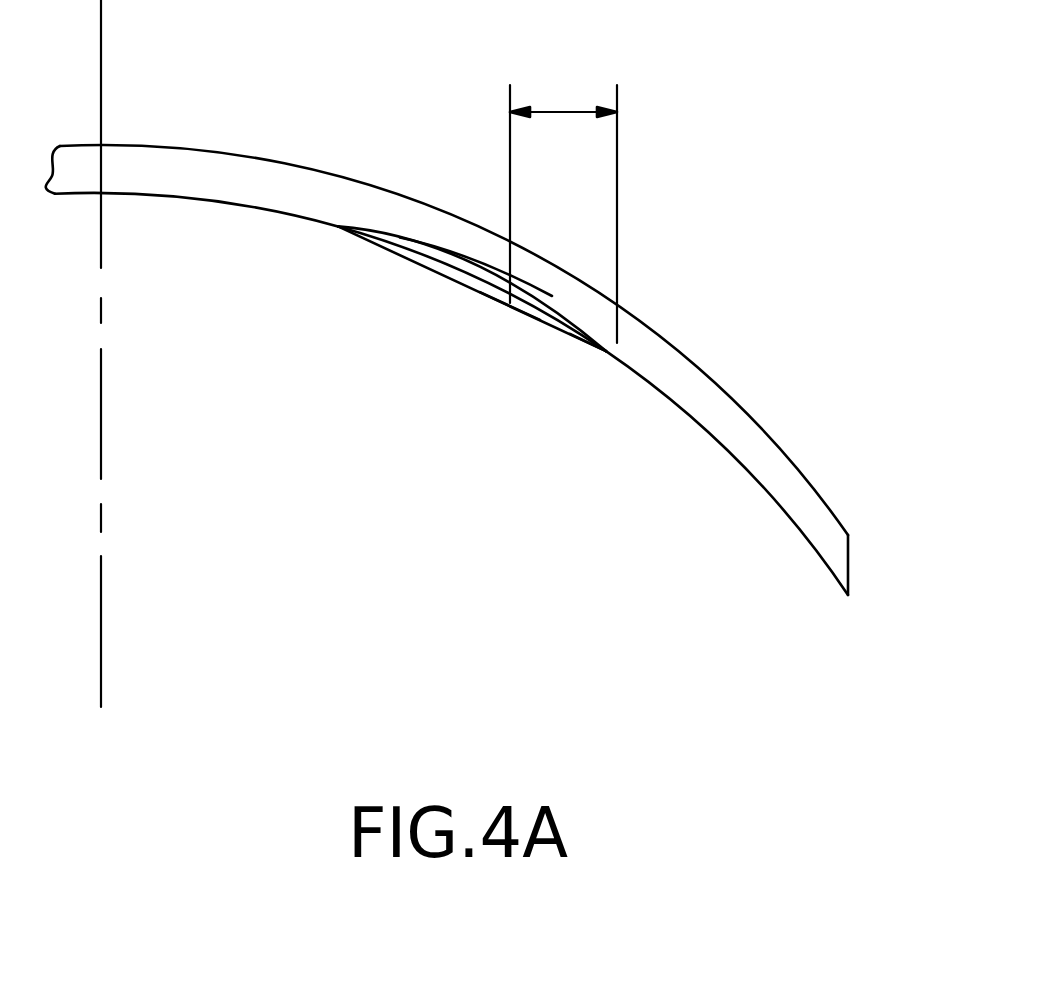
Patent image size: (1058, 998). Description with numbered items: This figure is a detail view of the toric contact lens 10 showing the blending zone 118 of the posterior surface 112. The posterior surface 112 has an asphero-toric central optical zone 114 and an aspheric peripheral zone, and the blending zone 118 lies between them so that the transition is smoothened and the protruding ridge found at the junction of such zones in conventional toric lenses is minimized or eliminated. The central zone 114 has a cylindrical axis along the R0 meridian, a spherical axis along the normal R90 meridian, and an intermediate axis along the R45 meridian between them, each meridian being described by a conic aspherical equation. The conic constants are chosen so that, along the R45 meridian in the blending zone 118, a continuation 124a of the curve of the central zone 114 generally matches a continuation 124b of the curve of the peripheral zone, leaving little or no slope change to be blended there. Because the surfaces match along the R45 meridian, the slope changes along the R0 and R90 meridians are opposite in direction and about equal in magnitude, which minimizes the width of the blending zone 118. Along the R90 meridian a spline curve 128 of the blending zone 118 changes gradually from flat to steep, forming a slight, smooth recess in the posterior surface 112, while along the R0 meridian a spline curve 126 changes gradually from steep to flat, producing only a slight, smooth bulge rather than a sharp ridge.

The glass sheet / curved article 10 is at (484, 353).
The posterior surface 112 is at (783, 510).
The central optical zone 114 is at (137, 195).
The blending zone 118 is at (565, 112).
The continuation of the curve of the central zone surface 124a is at (530, 303).
The continuation of the curve of the peripheral zone surface 124b is at (598, 348).
The spline curve 126 is at (434, 314).
The spline curve 128 is at (552, 295).
The R0 meridian R0 is at (448, 287).
The R45 meridian R45 is at (493, 283).
The R90 meridian R90 is at (473, 258).